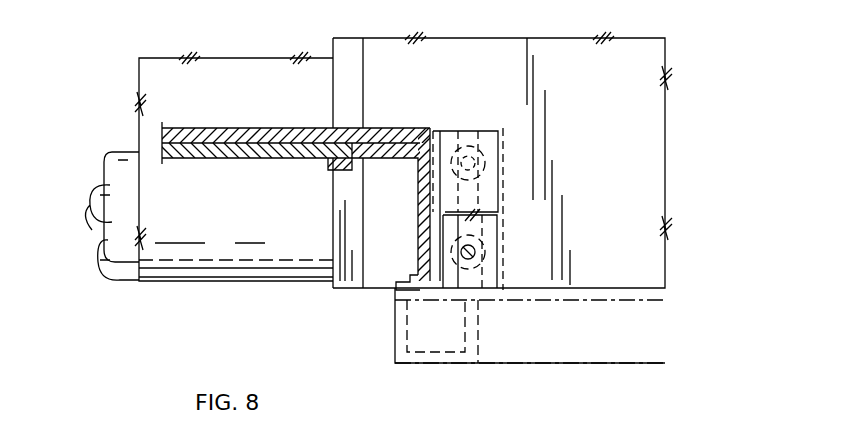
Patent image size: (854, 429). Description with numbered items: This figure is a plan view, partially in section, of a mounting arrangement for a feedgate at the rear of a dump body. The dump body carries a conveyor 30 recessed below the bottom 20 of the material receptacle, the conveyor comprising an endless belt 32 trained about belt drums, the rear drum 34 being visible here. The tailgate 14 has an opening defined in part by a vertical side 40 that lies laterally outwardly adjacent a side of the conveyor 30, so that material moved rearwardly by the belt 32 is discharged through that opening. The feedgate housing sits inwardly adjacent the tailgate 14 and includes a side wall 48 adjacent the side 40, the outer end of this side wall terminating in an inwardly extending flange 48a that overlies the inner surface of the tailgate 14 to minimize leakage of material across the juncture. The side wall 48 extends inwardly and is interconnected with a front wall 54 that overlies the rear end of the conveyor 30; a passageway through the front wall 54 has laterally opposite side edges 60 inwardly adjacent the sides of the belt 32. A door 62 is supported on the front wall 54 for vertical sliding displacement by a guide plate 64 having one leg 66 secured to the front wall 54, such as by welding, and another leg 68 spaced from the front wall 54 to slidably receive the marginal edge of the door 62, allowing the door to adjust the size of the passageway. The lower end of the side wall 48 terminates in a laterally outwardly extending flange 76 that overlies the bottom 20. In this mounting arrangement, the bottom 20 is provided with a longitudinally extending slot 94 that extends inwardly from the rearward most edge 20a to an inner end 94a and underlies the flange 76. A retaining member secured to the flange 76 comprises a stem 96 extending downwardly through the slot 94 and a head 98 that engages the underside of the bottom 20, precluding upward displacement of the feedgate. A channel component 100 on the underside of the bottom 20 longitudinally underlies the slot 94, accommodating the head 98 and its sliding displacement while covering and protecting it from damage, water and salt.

The tailgate 14 is at (590, 362).
The bottom 20 is at (640, 128).
The rearward most edge 20a is at (613, 290).
The conveyor 30 is at (174, 281).
The endless belt 32 is at (145, 75).
The rear drum 34 is at (118, 166).
The vertical side 40 is at (392, 325).
The side wall 48 is at (423, 230).
The inwardly extending flange 48a is at (403, 283).
The front wall 54 is at (218, 136).
The side edges 60 is at (290, 128).
The door 62 is at (212, 160).
The guide plate 64 is at (347, 172).
The leg 66 is at (402, 153).
The leg 68 is at (330, 163).
The laterally outwardly extending flange 76 is at (445, 130).
The longitudinally extending slot 94 is at (443, 216).
The inner end 94a is at (468, 128).
The stem 96 is at (503, 140).
The head 98 is at (500, 160).
The channel component 100 is at (480, 265).